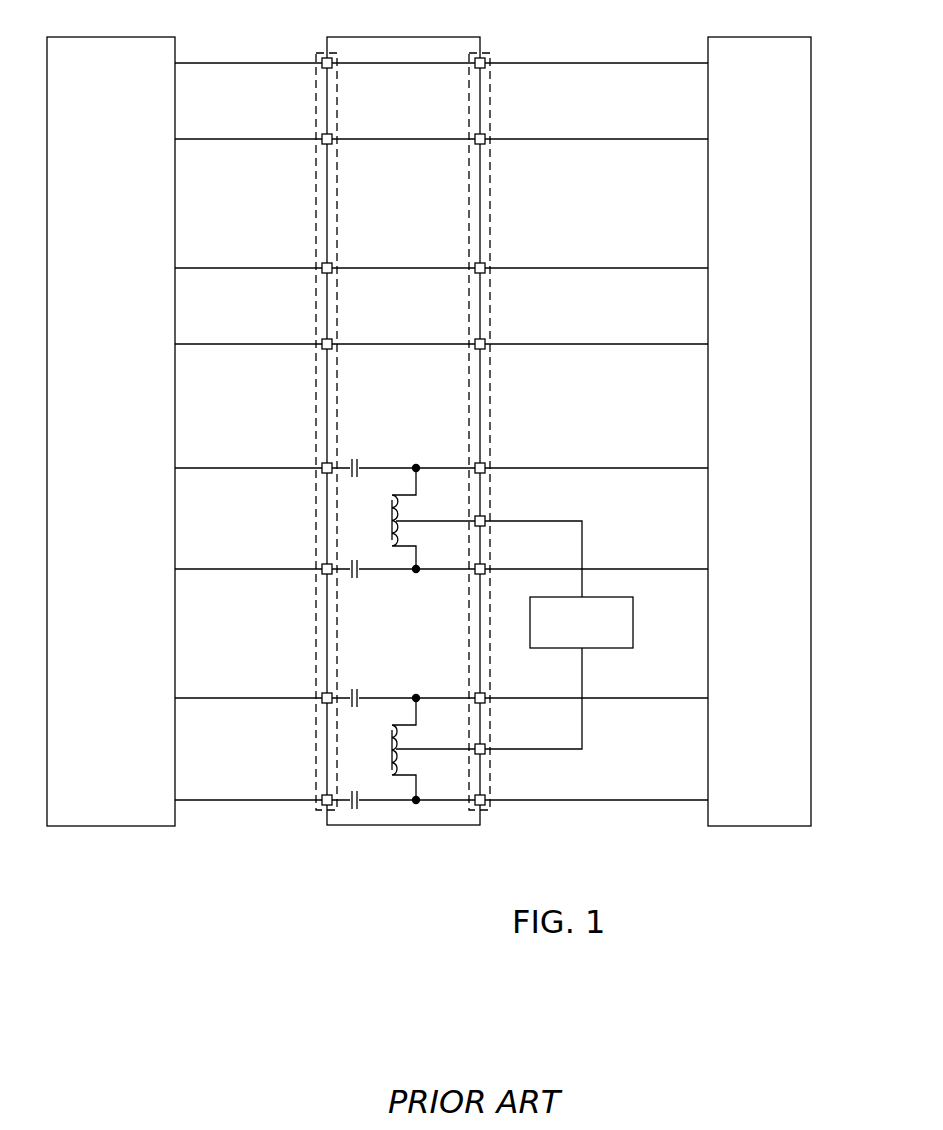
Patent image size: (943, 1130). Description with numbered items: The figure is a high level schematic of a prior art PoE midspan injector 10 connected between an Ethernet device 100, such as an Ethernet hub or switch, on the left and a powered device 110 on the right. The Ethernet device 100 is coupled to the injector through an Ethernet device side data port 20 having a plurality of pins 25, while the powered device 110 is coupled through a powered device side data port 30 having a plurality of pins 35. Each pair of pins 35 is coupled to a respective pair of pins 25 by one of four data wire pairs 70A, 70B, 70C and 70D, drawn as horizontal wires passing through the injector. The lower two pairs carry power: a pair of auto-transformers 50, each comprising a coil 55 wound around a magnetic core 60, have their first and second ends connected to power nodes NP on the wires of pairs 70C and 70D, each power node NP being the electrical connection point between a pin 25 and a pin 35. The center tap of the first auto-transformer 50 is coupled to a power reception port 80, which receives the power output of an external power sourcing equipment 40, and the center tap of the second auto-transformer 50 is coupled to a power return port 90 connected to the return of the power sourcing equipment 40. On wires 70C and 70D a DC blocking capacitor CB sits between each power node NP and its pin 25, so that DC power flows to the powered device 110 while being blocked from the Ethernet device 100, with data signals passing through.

The PoE midspan injector 10 is at (355, 826).
The Ethernet device side data port 20 is at (316, 90).
The pins 25 is at (332, 60).
The powered device side data port 30 is at (490, 237).
The pins 35 is at (486, 59).
The power sourcing equipment (PSE) 40 is at (633, 623).
The auto-transformer 50 is at (400, 514).
The coil 55 is at (405, 493).
The magnetic core 60 is at (392, 506).
The data wire pair 70A is at (365, 65).
The data wire pair 70B is at (362, 268).
The data wire pair 70C is at (393, 467).
The data wire pair 70D is at (377, 700).
The power reception port 80 is at (475, 523).
The power return port 90 is at (485, 744).
The Ethernet device 100 is at (97, 826).
The powered device (PD) 110 is at (785, 826).
The DC blocking capacitor CB is at (357, 624).
The power node NP is at (416, 634).